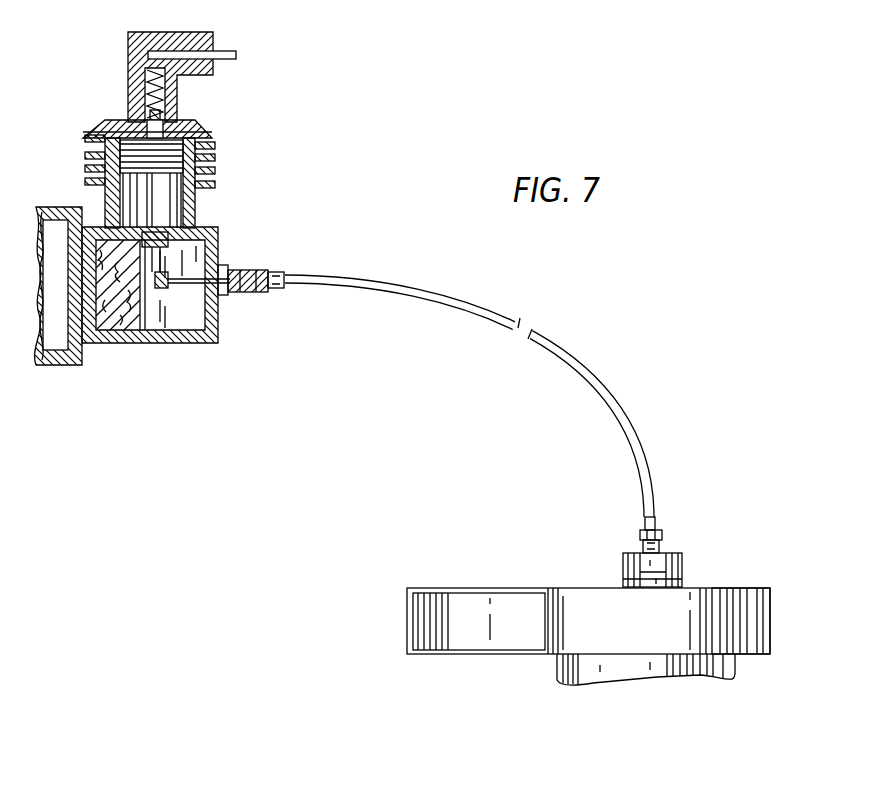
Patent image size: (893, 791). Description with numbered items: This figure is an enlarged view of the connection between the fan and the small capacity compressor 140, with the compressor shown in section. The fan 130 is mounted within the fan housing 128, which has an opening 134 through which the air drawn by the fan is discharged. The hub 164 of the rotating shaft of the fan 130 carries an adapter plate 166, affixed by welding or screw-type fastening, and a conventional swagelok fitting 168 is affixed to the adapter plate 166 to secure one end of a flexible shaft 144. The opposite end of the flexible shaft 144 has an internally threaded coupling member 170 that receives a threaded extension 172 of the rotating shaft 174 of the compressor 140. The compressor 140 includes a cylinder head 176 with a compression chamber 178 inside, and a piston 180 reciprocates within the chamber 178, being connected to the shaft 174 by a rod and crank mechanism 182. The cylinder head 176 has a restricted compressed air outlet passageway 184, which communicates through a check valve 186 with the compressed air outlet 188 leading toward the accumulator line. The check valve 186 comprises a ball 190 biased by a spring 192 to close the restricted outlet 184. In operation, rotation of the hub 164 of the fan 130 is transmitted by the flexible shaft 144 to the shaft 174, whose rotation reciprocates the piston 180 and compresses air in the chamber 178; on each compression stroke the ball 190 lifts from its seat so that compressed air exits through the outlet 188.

The fan housing 128 is at (667, 632).
The fan 130 is at (553, 663).
The opening 134 is at (420, 622).
The small capacity compressor 140 is at (222, 152).
The flexible shaft 144 is at (589, 376).
The hub 164 is at (681, 583).
The adapter plate 166 is at (681, 561).
The swagelok fitting 168 is at (663, 544).
The internally threaded coupling member 170 is at (277, 292).
The threaded extension 172 is at (255, 270).
The rotating shaft 174 is at (214, 296).
The cylinder head 176 is at (103, 128).
The compression chamber 178 is at (209, 132).
The piston 180 is at (98, 172).
The rod and crank mechanism 182 is at (171, 218).
The restricted compressed air outlet passageway 184 is at (178, 130).
The check valve 186 is at (131, 86).
The compressed air outlet 188 is at (232, 53).
The ball 190 is at (134, 120).
The spring 192 is at (130, 68).